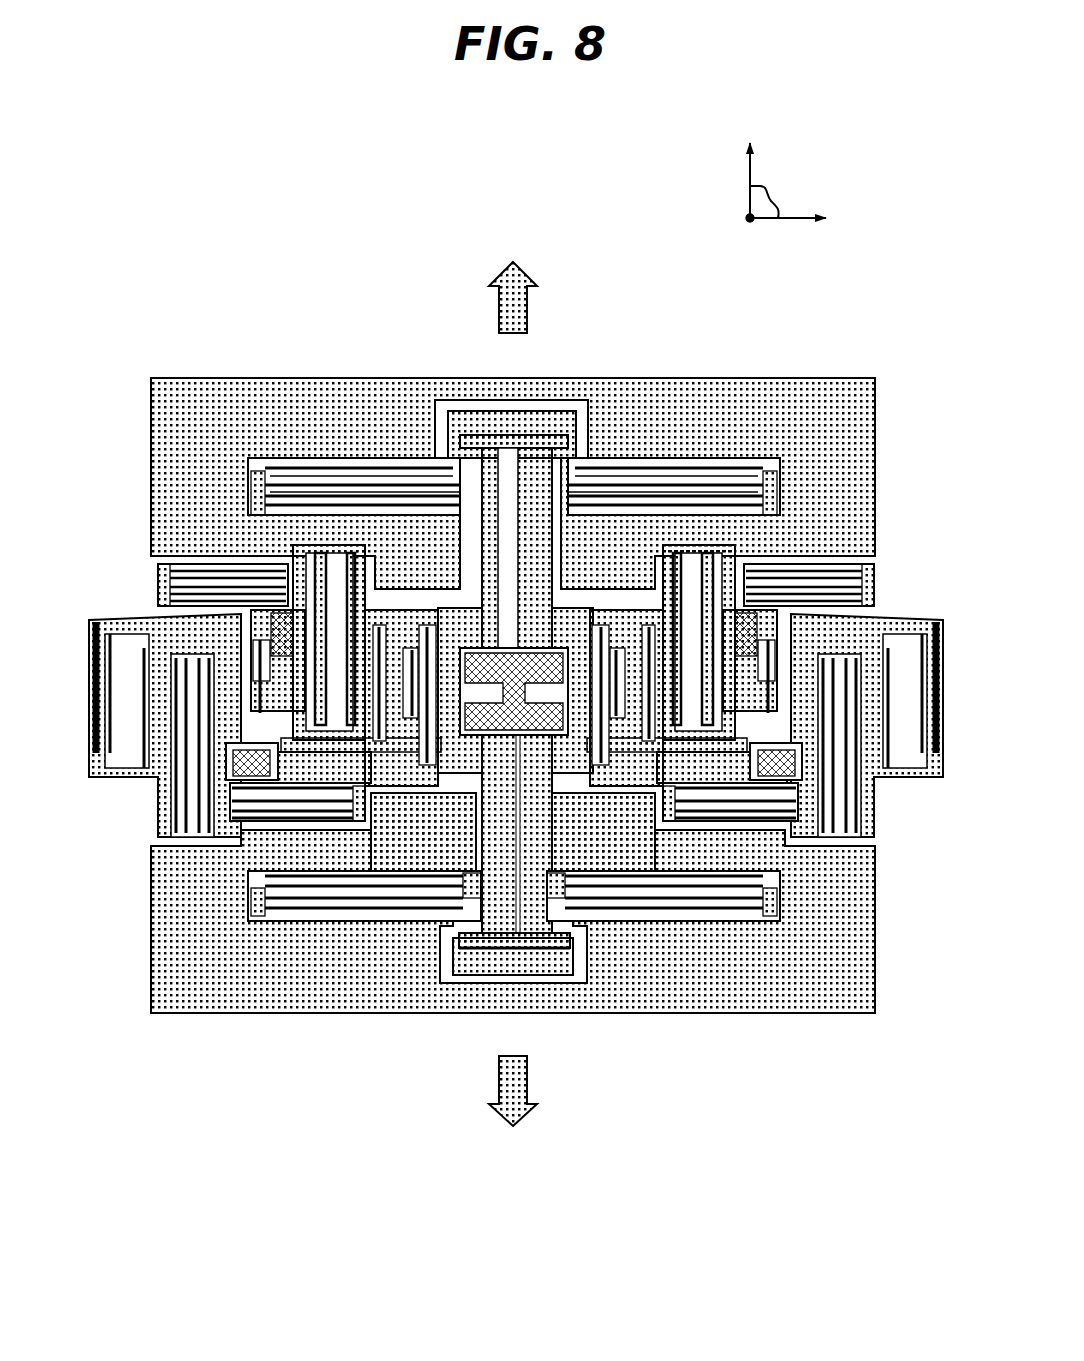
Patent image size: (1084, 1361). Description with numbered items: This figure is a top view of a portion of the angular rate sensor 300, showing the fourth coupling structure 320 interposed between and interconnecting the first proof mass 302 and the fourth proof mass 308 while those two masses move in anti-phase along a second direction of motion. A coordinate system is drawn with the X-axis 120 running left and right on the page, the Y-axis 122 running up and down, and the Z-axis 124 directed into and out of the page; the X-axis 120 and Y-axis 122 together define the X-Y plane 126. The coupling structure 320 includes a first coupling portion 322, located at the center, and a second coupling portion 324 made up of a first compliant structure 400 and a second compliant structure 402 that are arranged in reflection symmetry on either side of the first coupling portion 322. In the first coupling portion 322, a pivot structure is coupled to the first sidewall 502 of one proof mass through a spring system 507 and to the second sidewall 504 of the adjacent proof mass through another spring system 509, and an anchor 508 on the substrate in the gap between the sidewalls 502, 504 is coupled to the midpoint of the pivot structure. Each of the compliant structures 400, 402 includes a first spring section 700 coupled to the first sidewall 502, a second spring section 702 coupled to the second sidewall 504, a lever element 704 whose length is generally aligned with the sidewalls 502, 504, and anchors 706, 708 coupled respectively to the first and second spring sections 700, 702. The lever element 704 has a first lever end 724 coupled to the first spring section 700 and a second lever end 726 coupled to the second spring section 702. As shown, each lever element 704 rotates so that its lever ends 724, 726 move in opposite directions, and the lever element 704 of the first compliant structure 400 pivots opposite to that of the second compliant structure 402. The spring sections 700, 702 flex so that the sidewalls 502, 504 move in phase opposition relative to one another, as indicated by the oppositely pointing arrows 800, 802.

The X-axis 120 is at (843, 212).
The Y-axis 122 is at (740, 115).
The Z-axis 124 is at (752, 226).
The X-Y plane 126 is at (762, 193).
The angular rate sensor 300 is at (849, 1178).
The first proof mass 302 is at (803, 410).
The fourth proof mass 308 is at (803, 976).
The fourth coupling structure 320 is at (322, 275).
The first coupling portion 322 is at (530, 908).
The second coupling portion 324 is at (750, 937).
The first compliant structure 400 is at (292, 832).
The second compliant structure 402 is at (735, 842).
The first sidewall 502 is at (578, 602).
The second sidewall 504 is at (624, 773).
The spring system 507 is at (347, 470).
The anchor 508 is at (490, 645).
The spring system 509 is at (352, 903).
The first spring section 700 is at (320, 534).
The second spring section 702 is at (255, 826).
The lever element 704 is at (105, 612).
The anchor 706 is at (278, 612).
The anchor 708 is at (250, 764).
The first lever end 724 is at (398, 712).
The second lever end 726 is at (104, 660).
The arrow 800 is at (488, 302).
The arrow 802 is at (486, 1068).